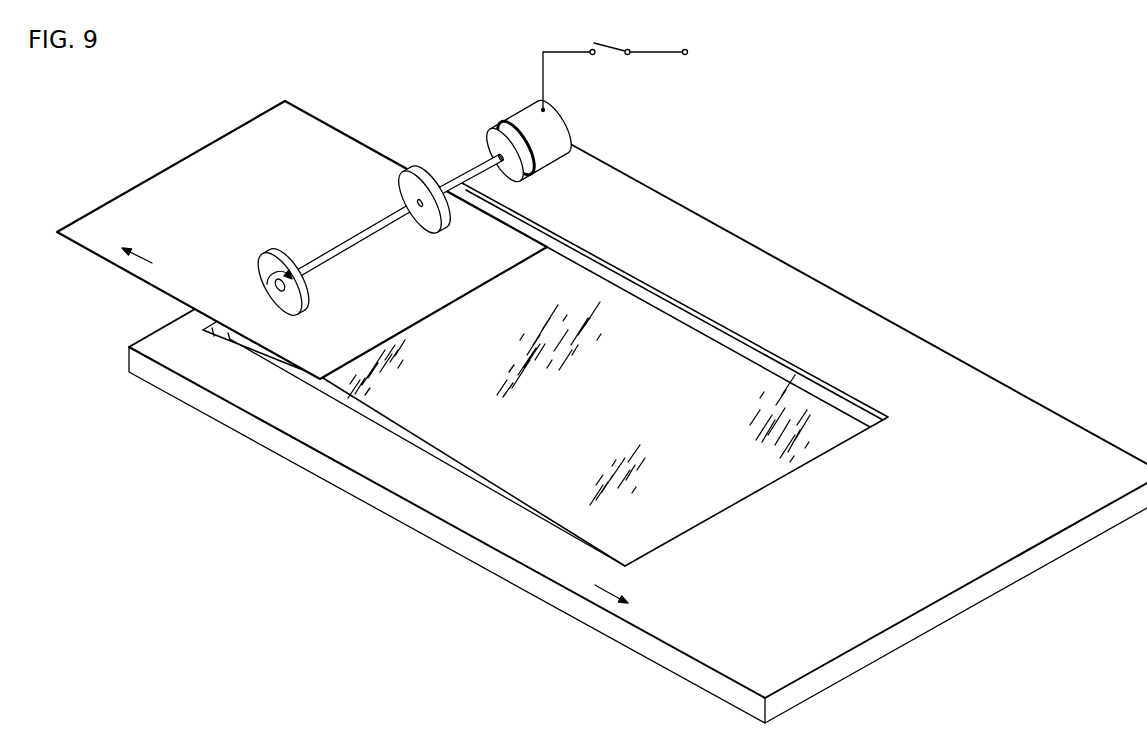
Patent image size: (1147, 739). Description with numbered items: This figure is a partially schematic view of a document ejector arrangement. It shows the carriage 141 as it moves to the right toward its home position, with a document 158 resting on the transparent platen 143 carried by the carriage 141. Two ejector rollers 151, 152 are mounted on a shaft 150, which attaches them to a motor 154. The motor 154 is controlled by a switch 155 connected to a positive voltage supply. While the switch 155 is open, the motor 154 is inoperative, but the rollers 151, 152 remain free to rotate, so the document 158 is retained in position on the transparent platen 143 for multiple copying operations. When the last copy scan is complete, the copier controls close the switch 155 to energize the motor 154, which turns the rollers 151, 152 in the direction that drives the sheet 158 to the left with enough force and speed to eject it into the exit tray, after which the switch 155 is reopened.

The carriage 141 is at (818, 302).
The transparent platen 143 is at (728, 490).
The shaft 150 is at (477, 172).
The ejector roller 151 is at (268, 267).
The ejector roller 152 is at (430, 225).
The motor 154 is at (548, 156).
The switch 155 is at (621, 37).
The document 158 is at (165, 198).